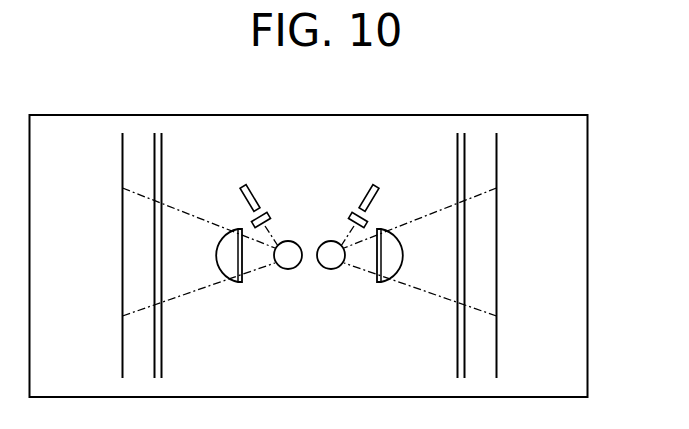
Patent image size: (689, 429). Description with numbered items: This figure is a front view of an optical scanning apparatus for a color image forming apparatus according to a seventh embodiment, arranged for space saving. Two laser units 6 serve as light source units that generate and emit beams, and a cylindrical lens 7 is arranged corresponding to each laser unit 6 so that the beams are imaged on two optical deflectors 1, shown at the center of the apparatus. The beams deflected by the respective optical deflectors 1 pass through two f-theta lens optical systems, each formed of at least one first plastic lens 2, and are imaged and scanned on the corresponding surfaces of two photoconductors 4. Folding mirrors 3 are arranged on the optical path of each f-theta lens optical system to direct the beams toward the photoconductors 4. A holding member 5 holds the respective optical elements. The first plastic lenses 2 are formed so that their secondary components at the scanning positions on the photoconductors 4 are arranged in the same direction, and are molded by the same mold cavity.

The optical deflector 1 is at (328, 269).
The first plastic lens 2 is at (233, 282).
The folding mirror 3 is at (162, 162).
The photoconductor 4 is at (122, 162).
The holding member 5 is at (588, 250).
The laser unit 6 is at (244, 186).
The cylindrical lens 7 is at (252, 217).